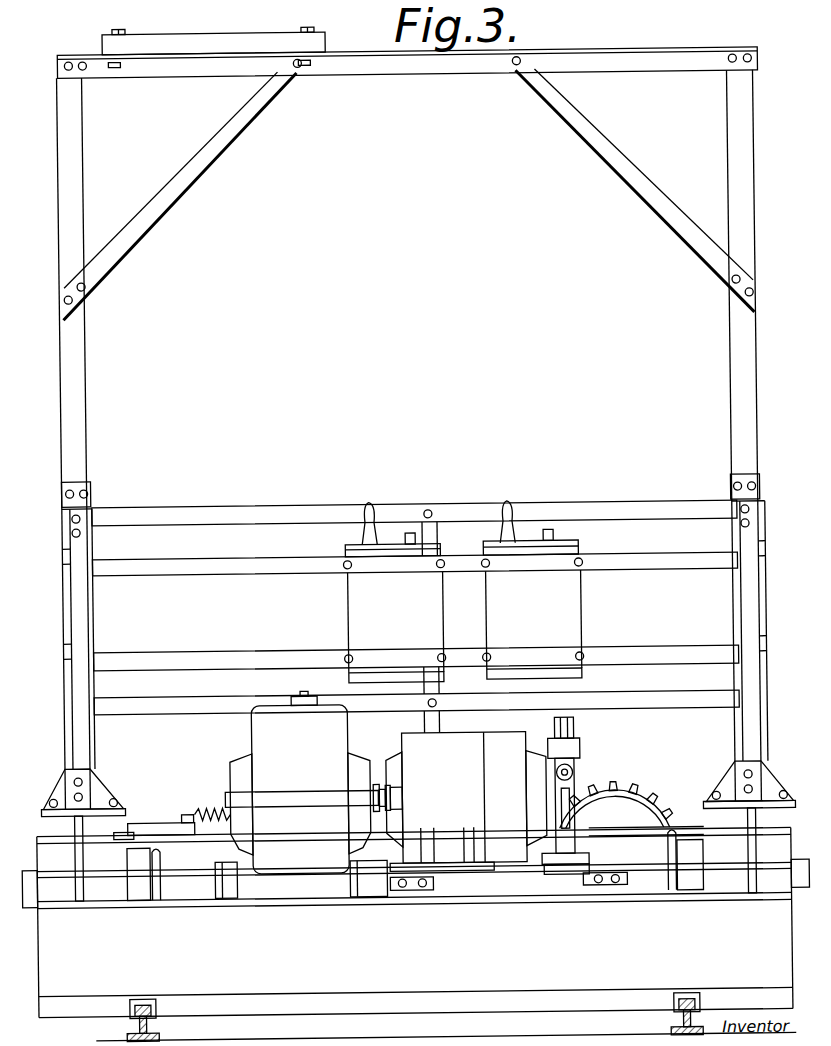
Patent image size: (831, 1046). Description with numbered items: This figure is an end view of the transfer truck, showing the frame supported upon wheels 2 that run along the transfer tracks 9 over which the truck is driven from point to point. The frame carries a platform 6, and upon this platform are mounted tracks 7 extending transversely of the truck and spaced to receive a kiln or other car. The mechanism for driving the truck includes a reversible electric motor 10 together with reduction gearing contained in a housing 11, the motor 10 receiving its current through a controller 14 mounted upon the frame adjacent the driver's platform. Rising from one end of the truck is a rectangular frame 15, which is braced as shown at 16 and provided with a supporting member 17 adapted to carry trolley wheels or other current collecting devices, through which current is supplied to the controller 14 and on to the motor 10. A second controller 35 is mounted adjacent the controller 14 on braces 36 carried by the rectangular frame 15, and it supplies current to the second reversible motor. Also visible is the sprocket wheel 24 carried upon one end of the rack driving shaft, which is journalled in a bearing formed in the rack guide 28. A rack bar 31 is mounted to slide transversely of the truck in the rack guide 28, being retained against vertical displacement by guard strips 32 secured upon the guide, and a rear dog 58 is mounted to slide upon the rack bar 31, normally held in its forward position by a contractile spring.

The wheels 2 is at (141, 886).
The platform 6 is at (296, 894).
The tracks 7 is at (193, 870).
The transfer tracks 9 is at (137, 1010).
The electric motor 10 is at (467, 801).
The housing 11 is at (300, 794).
The controller 14 is at (532, 589).
The rectangular frame 15 is at (83, 449).
The braces 16 is at (175, 194).
The supporting member 17 is at (192, 45).
The sprocket wheel 24 is at (629, 791).
The rack guide 28 is at (108, 851).
The rack bar 31 is at (114, 828).
The guard strips 32 is at (224, 835).
The controller 35 is at (394, 592).
The braces 36 is at (251, 563).
The rear dog 58 is at (162, 820).